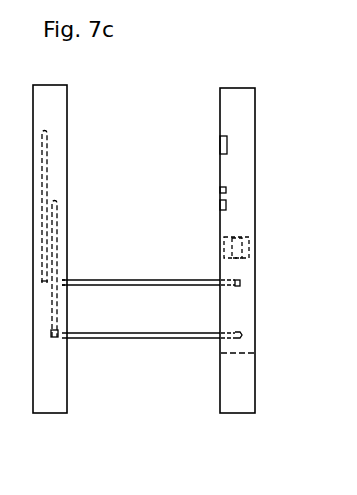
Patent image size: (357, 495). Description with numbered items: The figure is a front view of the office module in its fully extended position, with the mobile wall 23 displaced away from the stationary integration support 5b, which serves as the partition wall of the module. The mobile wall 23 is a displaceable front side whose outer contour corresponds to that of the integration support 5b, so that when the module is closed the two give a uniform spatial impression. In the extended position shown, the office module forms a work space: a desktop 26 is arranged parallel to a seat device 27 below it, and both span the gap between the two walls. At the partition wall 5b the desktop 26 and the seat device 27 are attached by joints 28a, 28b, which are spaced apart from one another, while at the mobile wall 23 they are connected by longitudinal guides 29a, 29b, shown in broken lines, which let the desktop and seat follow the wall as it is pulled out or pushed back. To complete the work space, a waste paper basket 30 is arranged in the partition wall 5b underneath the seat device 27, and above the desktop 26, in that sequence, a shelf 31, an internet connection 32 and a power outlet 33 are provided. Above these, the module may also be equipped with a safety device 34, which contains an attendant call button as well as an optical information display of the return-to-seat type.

The mobile wall 23 is at (51, 402).
The integration support 5b is at (238, 414).
The longitudinal guide 29a is at (47, 145).
The longitudinal guide 29b is at (57, 210).
The desktop 26 is at (107, 280).
The seat device 27 is at (150, 338).
The joint 28a is at (240, 283).
The joint 28b is at (242, 336).
The safety device 34 is at (218, 147).
The power outlet 33 is at (218, 190).
The internet connection 32 is at (218, 207).
The shelf 31 is at (222, 248).
The waste paper basket 30 is at (230, 388).